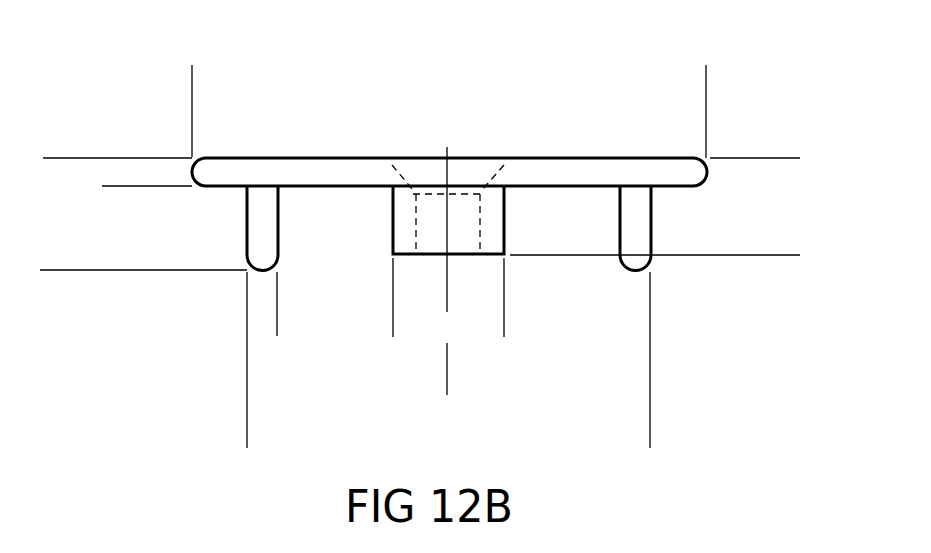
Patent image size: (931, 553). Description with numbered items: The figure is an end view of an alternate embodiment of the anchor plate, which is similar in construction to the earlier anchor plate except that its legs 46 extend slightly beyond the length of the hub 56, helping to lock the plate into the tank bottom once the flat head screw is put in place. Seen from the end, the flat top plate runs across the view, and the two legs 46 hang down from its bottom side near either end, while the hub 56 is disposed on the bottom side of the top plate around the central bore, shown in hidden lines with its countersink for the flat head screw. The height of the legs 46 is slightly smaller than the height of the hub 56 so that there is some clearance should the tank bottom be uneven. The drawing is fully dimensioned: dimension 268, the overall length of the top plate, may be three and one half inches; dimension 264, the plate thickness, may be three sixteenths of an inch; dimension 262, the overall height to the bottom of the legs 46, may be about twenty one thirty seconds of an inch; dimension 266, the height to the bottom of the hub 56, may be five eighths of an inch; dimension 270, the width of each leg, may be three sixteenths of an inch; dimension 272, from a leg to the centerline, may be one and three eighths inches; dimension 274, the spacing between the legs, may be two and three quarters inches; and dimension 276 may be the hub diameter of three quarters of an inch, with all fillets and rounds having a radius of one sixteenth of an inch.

The legs 46 is at (279, 232).
The hub 56 is at (505, 231).
The dimension 262 is at (48, 158).
The dimension 264 is at (108, 220).
The dimension 266 is at (793, 158).
The dimension 268 is at (706, 73).
The dimension 270 is at (312, 328).
The dimension 272 is at (447, 387).
The dimension 274 is at (650, 444).
The dimension 276 is at (504, 329).